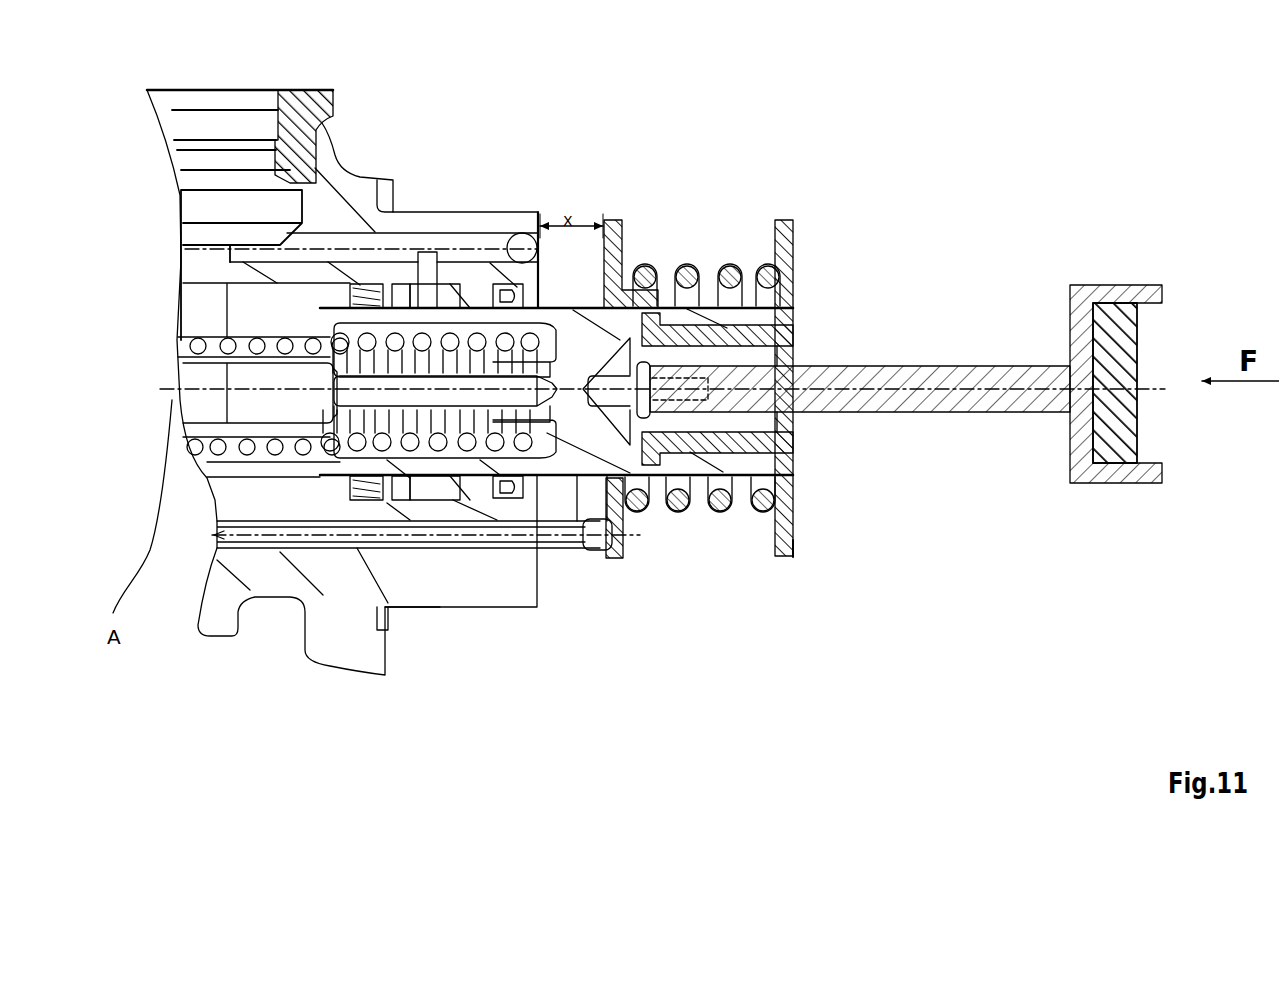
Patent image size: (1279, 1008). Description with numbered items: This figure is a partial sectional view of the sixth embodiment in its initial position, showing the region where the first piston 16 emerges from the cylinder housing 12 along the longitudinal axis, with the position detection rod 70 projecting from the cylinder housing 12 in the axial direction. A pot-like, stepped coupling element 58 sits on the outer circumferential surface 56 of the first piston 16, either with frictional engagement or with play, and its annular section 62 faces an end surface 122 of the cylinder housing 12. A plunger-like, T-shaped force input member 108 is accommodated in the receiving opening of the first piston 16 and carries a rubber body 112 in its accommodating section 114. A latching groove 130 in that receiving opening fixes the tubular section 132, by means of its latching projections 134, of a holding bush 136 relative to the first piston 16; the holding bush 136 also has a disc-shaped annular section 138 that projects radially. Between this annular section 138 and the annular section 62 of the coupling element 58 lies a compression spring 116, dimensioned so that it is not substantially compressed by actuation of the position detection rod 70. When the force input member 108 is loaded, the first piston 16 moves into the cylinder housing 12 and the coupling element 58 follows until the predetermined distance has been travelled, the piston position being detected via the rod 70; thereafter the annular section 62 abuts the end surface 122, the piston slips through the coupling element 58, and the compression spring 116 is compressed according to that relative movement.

The cylinder housing 12 is at (392, 557).
The first piston 16 is at (490, 307).
The outer circumferential surface 56 is at (586, 525).
The coupling element 58 is at (607, 218).
The annular section 62 is at (632, 462).
The position detection rod 70 is at (467, 550).
The force input member 108 is at (853, 398).
The rubber body 112 is at (1138, 340).
The accommodating section 114 is at (1097, 292).
The compression spring 116 is at (722, 512).
The end surface 122 is at (525, 550).
The latching groove 130 is at (650, 468).
The tubular section 132 is at (732, 340).
The latching projections 134 is at (664, 345).
The holding bush 136 is at (789, 217).
The annular section 138 is at (792, 553).